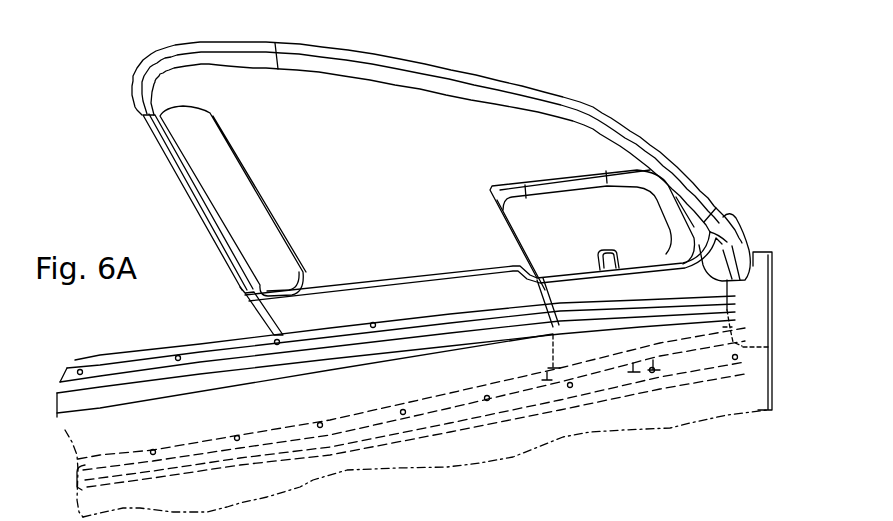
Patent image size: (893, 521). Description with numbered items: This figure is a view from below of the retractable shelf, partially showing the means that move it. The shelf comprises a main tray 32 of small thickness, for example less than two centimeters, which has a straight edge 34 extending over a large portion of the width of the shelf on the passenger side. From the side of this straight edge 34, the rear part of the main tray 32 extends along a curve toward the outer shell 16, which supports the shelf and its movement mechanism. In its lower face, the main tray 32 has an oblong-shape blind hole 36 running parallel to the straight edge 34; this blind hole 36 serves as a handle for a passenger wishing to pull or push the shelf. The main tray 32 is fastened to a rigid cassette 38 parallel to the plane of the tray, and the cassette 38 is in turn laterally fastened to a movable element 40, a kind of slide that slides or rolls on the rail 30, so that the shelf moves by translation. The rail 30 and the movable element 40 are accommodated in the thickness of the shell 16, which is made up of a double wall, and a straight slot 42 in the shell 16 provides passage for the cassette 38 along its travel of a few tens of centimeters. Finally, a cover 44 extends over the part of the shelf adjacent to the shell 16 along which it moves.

The outer shell 16 is at (137, 393).
The rail 30 is at (78, 490).
The main tray 32 is at (459, 77).
The straight edge 34 is at (168, 185).
The oblong-shape blind hole 36 is at (189, 124).
The rigid cassette 38 is at (576, 200).
The movable element 40 is at (718, 323).
The straight slot 42 is at (202, 349).
The cover 44 is at (751, 236).